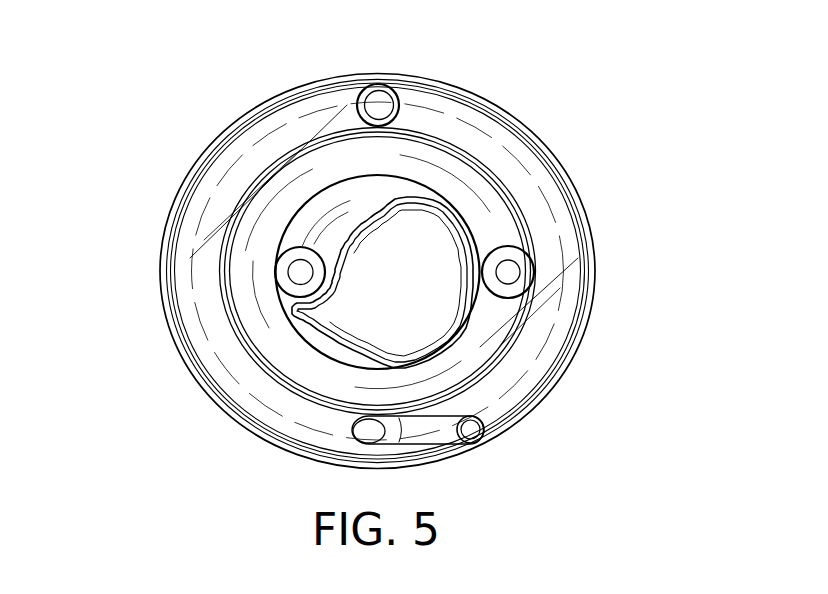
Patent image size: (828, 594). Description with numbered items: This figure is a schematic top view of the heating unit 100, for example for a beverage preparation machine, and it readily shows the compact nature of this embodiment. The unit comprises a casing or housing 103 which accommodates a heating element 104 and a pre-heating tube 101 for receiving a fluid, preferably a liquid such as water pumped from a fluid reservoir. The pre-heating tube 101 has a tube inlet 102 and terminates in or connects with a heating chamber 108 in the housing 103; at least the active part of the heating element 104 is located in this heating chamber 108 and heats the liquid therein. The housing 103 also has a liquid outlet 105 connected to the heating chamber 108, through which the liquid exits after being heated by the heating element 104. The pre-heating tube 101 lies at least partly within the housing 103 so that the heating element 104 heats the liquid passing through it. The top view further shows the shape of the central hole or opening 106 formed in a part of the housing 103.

The heating unit 100 is at (374, 261).
The pre-heating tube 101 is at (193, 283).
The tube inlet 102 is at (376, 100).
The housing 103 is at (590, 297).
The heating element 104 is at (497, 200).
The liquid outlet 105 is at (440, 432).
The central hole or opening 106 is at (410, 299).
The heating chamber 108 is at (445, 218).